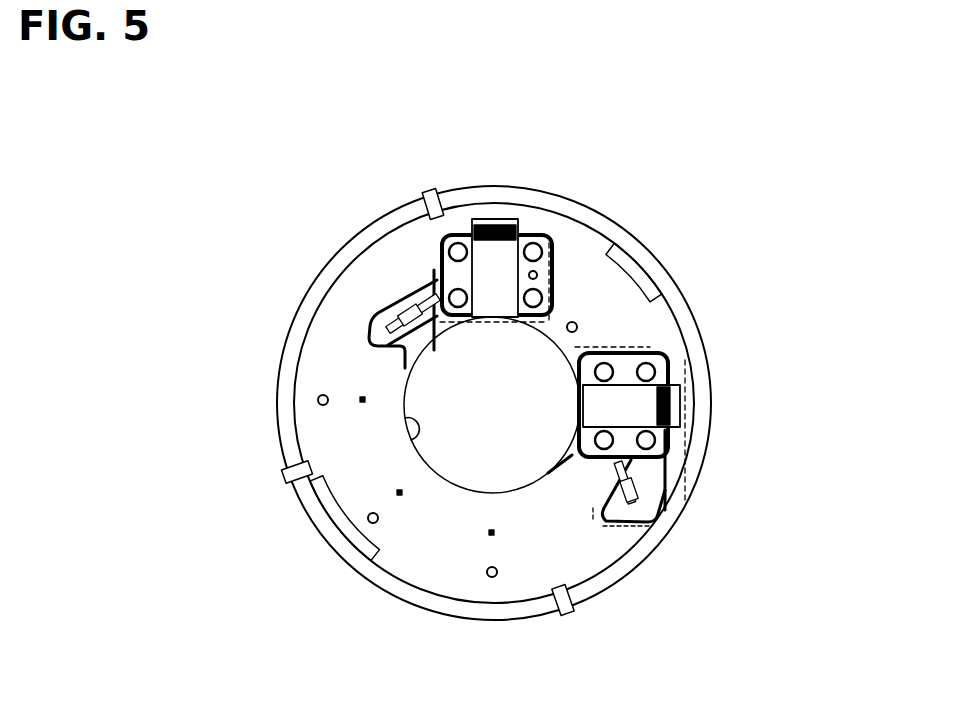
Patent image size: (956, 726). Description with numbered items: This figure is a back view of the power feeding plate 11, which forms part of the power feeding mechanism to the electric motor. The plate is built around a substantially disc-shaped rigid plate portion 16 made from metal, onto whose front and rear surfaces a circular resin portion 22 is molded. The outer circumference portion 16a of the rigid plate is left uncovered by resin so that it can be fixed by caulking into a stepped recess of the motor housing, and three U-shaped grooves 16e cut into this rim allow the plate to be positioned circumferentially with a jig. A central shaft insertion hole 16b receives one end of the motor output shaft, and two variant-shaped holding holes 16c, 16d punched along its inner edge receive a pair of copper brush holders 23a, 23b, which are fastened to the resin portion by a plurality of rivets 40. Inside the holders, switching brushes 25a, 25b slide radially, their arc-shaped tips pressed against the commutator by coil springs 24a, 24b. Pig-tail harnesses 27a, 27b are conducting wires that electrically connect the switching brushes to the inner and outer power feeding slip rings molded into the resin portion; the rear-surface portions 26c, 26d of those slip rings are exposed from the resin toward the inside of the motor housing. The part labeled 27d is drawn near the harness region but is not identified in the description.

The power feeding plate 11 is at (712, 353).
The rigid plate portion 16 is at (500, 620).
The outer circumference portion 16a is at (698, 444).
The shaft insertion hole 16b is at (410, 438).
The holding hole 16c is at (402, 313).
The holding hole 16d is at (702, 472).
The U-shaped groove 16e is at (428, 205).
The resin portion 22 is at (612, 246).
The brush holder 23a is at (543, 235).
The brush holder 23b is at (671, 383).
The coil spring 24a is at (505, 232).
The coil spring 24b is at (673, 406).
The switching brush 25a is at (400, 351).
The switching brush 25b is at (582, 448).
The exposed portion of slip ring 26c is at (375, 323).
The exposed portion of slip ring 26d is at (641, 482).
The pig-tail harness 27a is at (422, 293).
The pig-tail harness 27b is at (650, 474).
The spring coil portion 27d is at (378, 305).
The rivet 40 is at (460, 250).